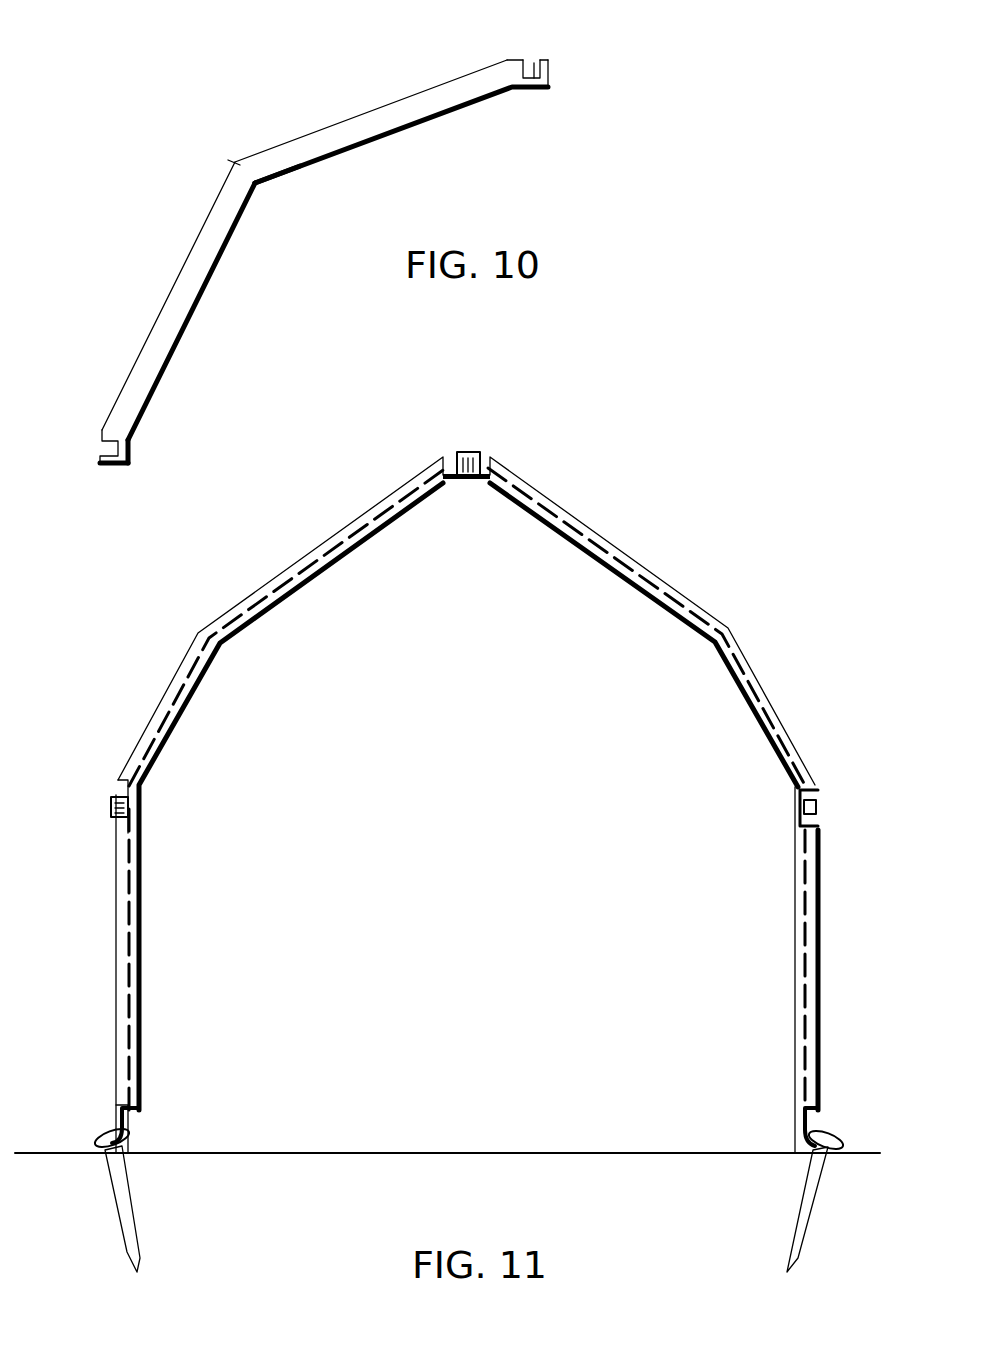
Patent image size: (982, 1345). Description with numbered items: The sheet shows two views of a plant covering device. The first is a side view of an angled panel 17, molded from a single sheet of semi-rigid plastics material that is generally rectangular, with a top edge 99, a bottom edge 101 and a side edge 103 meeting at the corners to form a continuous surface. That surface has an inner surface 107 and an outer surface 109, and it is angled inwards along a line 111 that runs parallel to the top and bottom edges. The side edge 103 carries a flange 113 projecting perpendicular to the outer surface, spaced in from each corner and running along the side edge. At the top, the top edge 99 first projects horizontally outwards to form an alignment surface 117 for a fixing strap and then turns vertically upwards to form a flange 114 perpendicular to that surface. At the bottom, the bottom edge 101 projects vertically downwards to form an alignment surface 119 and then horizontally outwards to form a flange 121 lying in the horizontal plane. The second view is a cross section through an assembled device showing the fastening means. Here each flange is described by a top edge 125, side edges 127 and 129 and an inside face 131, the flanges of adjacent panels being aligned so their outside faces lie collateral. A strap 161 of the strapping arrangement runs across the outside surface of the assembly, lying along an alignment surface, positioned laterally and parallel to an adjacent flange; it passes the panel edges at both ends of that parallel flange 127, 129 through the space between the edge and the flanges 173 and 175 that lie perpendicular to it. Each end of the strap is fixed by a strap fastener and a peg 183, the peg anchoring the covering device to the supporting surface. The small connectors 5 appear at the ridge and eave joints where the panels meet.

In FIG. 10, the angled panel 17 is at (342, 86).
In FIG. 10, the outer surface 109 is at (330, 125).
In FIG. 10, the line running parallel to the top and bottom edges 111 is at (230, 159).
In FIG. 10, the side edge 103 is at (388, 132).
In FIG. 10, the inner surface 107 is at (300, 168).
In FIG. 10, the flange 113 is at (200, 262).
In FIG. 10, the alignment surface 117 is at (536, 62).
In FIG. 10, the flange 114 is at (552, 68).
In FIG. 10, the top edge 99 is at (548, 92).
In FIG. 10, the alignment surface 119 is at (100, 445).
In FIG. 10, the bottom edge 101 is at (135, 466).
In FIG. 10, the flange 121 is at (110, 468).
In FIG. 11, the connector 5 is at (468, 452).
In FIG. 11, the side edge of flange 129 is at (455, 458).
In FIG. 11, the flange 173 is at (490, 468).
In FIG. 11, the top edge of flange 125 is at (320, 545).
In FIG. 11, the inside face of flange 131 is at (278, 583).
In FIG. 11, the strap 161 is at (190, 670).
In FIG. 11, the side edge of flange 127 is at (118, 780).
In FIG. 11, the flange 175 is at (818, 805).
In FIG. 11, the peg 183 is at (125, 1200).